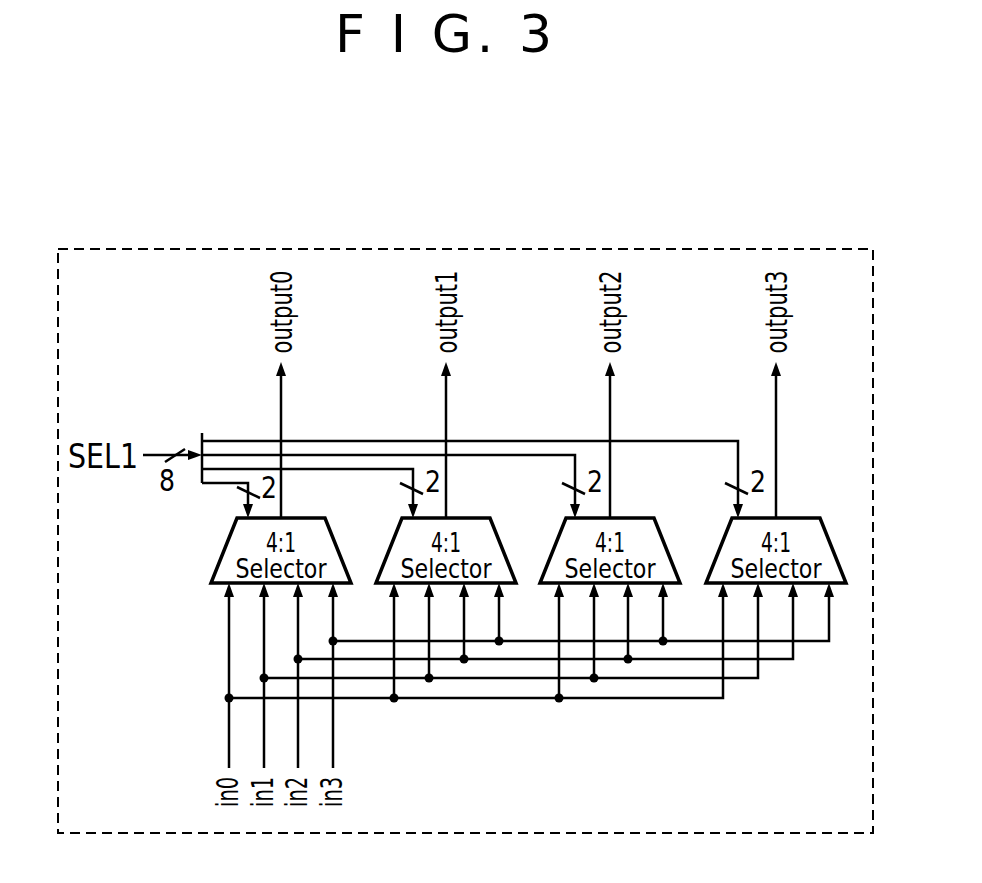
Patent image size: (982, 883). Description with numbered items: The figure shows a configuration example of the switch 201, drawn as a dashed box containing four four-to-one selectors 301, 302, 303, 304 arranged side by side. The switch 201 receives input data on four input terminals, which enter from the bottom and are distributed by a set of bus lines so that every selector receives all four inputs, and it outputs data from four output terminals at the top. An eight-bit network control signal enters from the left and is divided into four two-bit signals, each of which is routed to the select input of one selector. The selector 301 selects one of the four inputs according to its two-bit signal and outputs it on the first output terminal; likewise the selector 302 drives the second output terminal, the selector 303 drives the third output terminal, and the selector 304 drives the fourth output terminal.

The switch 201 is at (703, 249).
The selector 301 is at (221, 560).
The selector 302 is at (501, 540).
The selector 303 is at (665, 540).
The selector 304 is at (827, 537).